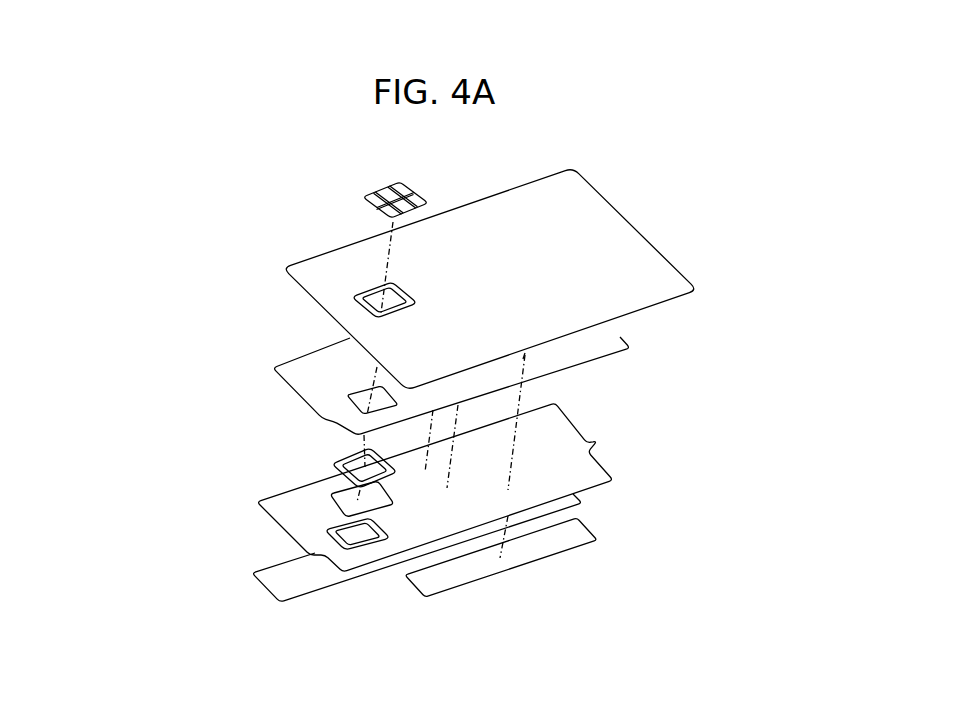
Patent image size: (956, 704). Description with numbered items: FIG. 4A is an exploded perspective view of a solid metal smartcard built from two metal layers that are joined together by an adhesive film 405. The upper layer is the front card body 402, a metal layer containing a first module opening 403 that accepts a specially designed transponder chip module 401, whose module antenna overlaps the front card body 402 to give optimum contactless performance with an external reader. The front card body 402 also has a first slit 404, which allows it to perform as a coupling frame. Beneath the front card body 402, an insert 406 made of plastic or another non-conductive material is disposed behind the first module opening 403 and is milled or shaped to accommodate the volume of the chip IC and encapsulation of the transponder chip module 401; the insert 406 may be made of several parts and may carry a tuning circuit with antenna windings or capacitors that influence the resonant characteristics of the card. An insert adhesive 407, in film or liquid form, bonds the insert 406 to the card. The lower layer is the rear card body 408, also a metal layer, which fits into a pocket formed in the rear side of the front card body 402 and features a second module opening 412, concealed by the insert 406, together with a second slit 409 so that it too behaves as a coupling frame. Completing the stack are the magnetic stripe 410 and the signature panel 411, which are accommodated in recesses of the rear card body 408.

The transponder chip module 401 is at (362, 196).
The front card body 402 is at (282, 269).
The first module opening 403 is at (416, 300).
The first slit 404 is at (332, 318).
The adhesive film 405 is at (277, 381).
The insert 406 is at (330, 463).
The insert adhesive 407 is at (330, 502).
The rear card body 408 is at (598, 452).
The second slit 409 is at (376, 556).
The magnetic stripe 410 is at (278, 603).
The signature panel 411 is at (482, 578).
The second module opening 412 is at (250, 572).